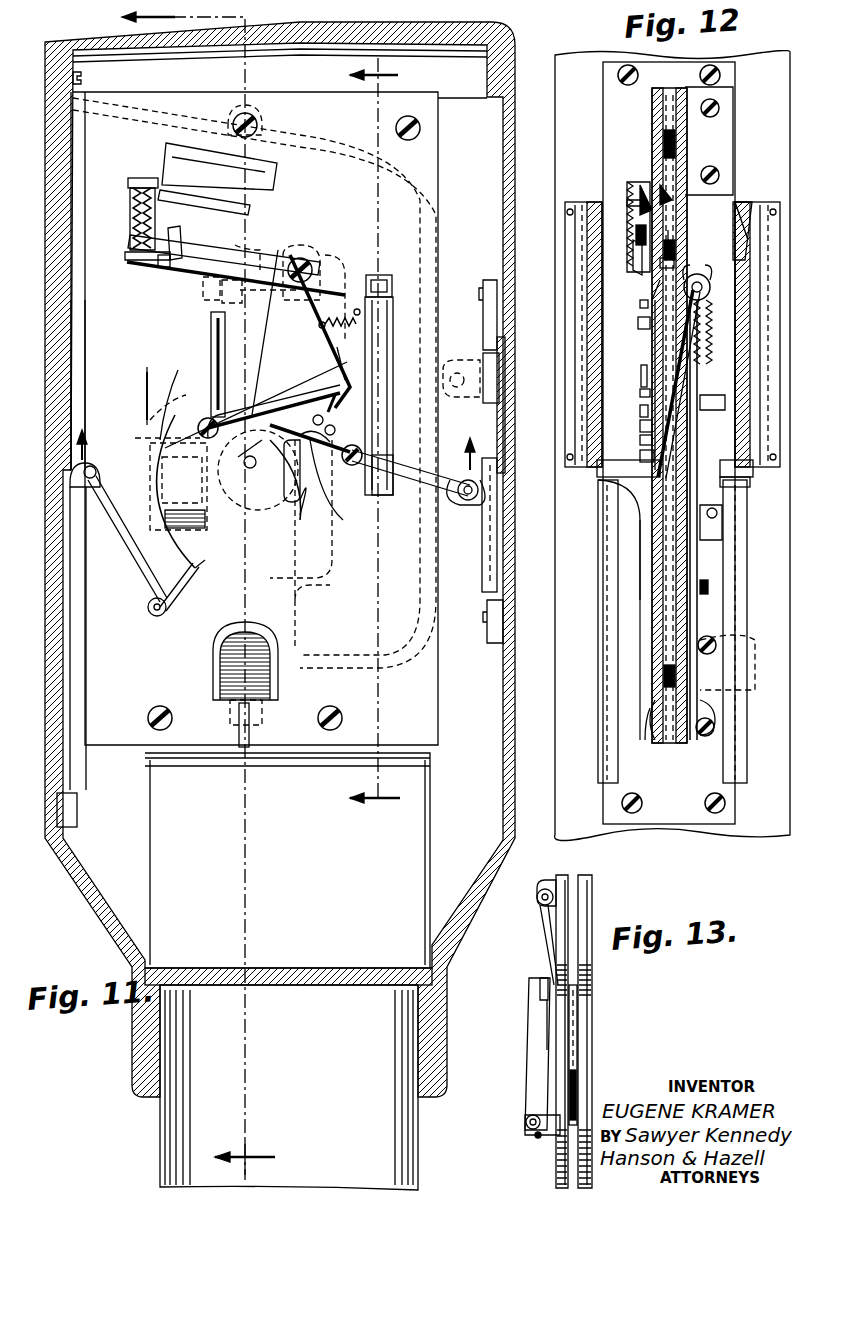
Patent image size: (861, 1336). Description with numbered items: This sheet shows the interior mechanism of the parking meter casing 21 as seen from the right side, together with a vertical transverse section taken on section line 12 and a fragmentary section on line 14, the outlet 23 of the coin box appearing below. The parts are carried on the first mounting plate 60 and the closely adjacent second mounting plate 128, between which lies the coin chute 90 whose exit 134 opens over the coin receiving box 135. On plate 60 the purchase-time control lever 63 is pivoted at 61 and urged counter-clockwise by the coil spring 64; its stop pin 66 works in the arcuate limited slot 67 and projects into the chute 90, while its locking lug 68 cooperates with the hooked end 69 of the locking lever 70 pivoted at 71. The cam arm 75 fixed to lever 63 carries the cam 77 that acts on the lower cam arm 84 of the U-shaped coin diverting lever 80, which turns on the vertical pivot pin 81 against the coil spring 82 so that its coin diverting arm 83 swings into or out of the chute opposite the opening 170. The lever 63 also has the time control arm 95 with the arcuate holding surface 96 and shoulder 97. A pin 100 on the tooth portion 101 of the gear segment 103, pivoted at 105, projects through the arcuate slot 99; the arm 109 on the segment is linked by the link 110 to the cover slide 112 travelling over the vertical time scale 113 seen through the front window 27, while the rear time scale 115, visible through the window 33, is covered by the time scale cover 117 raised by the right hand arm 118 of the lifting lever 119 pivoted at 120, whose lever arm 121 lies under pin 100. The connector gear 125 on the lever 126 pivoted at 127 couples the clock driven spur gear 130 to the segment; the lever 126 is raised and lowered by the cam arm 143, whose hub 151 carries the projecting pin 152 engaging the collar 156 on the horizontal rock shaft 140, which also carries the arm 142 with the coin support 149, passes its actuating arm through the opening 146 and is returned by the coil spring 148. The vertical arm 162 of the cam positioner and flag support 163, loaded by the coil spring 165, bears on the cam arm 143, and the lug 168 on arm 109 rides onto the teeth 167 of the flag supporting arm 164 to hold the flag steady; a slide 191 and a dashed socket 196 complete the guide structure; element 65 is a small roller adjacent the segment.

In FIG. 11, the section line 12— 12 is at (382, 434).
In FIG. 11, the section line 14— 14 is at (186, 593).
In FIG. 11, the housing 21 is at (108, 905).
In FIG. 12, the housing 21 is at (565, 75).
In FIG. 11, the tube / cup outlet 23 is at (490, 855).
In FIG. 11, the front window 27 is at (72, 355).
In FIG. 12, the front window 27 is at (588, 232).
In FIG. 11, the window 33 is at (500, 405).
In FIG. 11, the first mounting plate 60 is at (422, 143).
In FIG. 12, the first mounting plate 60 is at (652, 100).
In FIG. 13, the first mounting plate 60 is at (582, 895).
In FIG. 11, the pivot 61 is at (302, 258).
In FIG. 12, the pivot 61 is at (680, 275).
In FIG. 11, the purchase-time control lever 63 is at (283, 318).
In FIG. 12, the purchase-time control lever 63 is at (652, 300).
In FIG. 11, the coil spring 64 is at (362, 280).
In FIG. 12, the coil spring 64 is at (638, 325).
In FIG. 11, the roller 65 is at (332, 411).
In FIG. 11, the stop pin 66 is at (345, 422).
In FIG. 11, the arcuate limited slot 67 is at (320, 443).
In FIG. 11, the locking lug 68 is at (347, 394).
In FIG. 12, the locking lug 68 is at (640, 395).
In FIG. 11, the hooked end 69 is at (346, 353).
In FIG. 12, the hooked end 69 is at (640, 380).
In FIG. 11, the locking lever 70 is at (230, 440).
In FIG. 12, the locking lever 70 is at (640, 410).
In FIG. 11, the pivot 71 is at (200, 430).
In FIG. 12, the pivot 71 is at (640, 428).
In FIG. 11, the cam arm 75 is at (265, 250).
In FIG. 12, the cam arm 75 is at (673, 250).
In FIG. 11, the cam 77 is at (185, 240).
In FIG. 12, the cam 77 is at (640, 250).
In FIG. 11, the coin diverting lever 80 is at (128, 225).
In FIG. 12, the coin diverting lever 80 is at (625, 193).
In FIG. 11, the vertical pivot pin 81 is at (127, 255).
In FIG. 12, the vertical pivot pin 81 is at (627, 207).
In FIG. 11, the coil spring 82 is at (130, 185).
In FIG. 12, the coil spring 82 is at (640, 235).
In FIG. 11, the coin diverting arm 83 is at (225, 175).
In FIG. 12, the coin diverting arm 83 is at (672, 190).
In FIG. 11, the cam arm 84 is at (163, 270).
In FIG. 12, the cam arm 84 is at (660, 290).
In FIG. 11, the coin chute 90 is at (340, 155).
In FIG. 12, the coin chute 90 is at (672, 225).
In FIG. 11, the time control arm 95 is at (246, 449).
In FIG. 11, the arcuate holding surface 96 is at (262, 482).
In FIG. 11, the shoulder 97 is at (272, 510).
In FIG. 11, the arcuate slot 99 is at (306, 545).
In FIG. 11, the pin 100 is at (279, 418).
In FIG. 12, the pin 100 is at (635, 418).
In FIG. 11, the tooth portion 101 is at (200, 438).
In FIG. 11, the gear segment 103 is at (295, 509).
In FIG. 13, the gear segment 103 is at (578, 1095).
In FIG. 11, the pivot 105 is at (246, 464).
In FIG. 11, the arm 109 is at (150, 600).
In FIG. 13, the arm 109 is at (580, 1020).
In FIG. 11, the link 110 is at (115, 508).
In FIG. 12, the link 110 is at (645, 535).
In FIG. 11, the cover slide 112 is at (75, 562).
In FIG. 12, the cover slide 112 is at (610, 582).
In FIG. 11, the vertical time scale 113 is at (78, 320).
In FIG. 12, the vertical time scale 113 is at (725, 70).
In FIG. 11, the time scale 115 is at (512, 333).
In FIG. 11, the time scale cover 117 is at (482, 518).
In FIG. 11, the right hand arm 118 is at (418, 490).
In FIG. 12, the right hand arm 118 is at (600, 485).
In FIG. 11, the lifting lever 119 is at (365, 478).
In FIG. 11, the pivot 120 is at (354, 443).
In FIG. 12, the pivot 120 is at (642, 452).
In FIG. 11, the lever arm 121 is at (341, 491).
In FIG. 12, the lever arm 121 is at (645, 462).
In FIG. 11, the connector gear 125 is at (256, 397).
In FIG. 12, the connector gear 125 is at (715, 375).
In FIG. 11, the lever 126 is at (222, 335).
In FIG. 11, the pivot 127 is at (330, 335).
In FIG. 12, the second mounting plate 128 is at (690, 98).
In FIG. 13, the second mounting plate 128 is at (562, 875).
In FIG. 12, the clock driven spur gear 130 is at (722, 452).
In FIG. 11, the exit 134 is at (246, 748).
In FIG. 11, the coin receiving box 135 is at (175, 812).
In FIG. 11, the horizontal rock shaft 140 is at (340, 270).
In FIG. 12, the horizontal rock shaft 140 is at (712, 282).
In FIG. 13, the horizontal rock shaft 140 is at (536, 897).
In FIG. 11, the arm 142 is at (305, 610).
In FIG. 12, the arm 142 is at (700, 668).
In FIG. 11, the cam arm 143 is at (210, 328).
In FIG. 13, the cam arm 143 is at (540, 922).
In FIG. 12, the opening 146 is at (655, 352).
In FIG. 12, the coil spring 148 is at (722, 310).
In FIG. 11, the coin support 149 is at (255, 700).
In FIG. 12, the coin support 149 is at (690, 715).
In FIG. 11, the hub 151 is at (203, 285).
In FIG. 12, the projecting pin 152 is at (740, 230).
In FIG. 11, the collar 156 is at (235, 245).
In FIG. 12, the collar 156 is at (760, 195).
In FIG. 11, the vertical arm 162 is at (185, 393).
In FIG. 12, the vertical arm 162 is at (722, 485).
In FIG. 11, the cam positioner and flag support 163 is at (174, 575).
In FIG. 12, the cam positioner and flag support 163 is at (725, 530).
In FIG. 13, the cam positioner and flag support 163 is at (528, 1138).
In FIG. 11, the flag supporting arm 164 is at (134, 386).
In FIG. 13, the flag supporting arm 164 is at (530, 1070).
In FIG. 11, the coil spring 165 is at (183, 492).
In FIG. 13, the coil spring 165 is at (528, 1117).
In FIG. 11, the teeth 167 is at (147, 392).
In FIG. 13, the teeth 167 is at (545, 1008).
In FIG. 11, the lug 168 is at (198, 572).
In FIG. 12, the lug 168 is at (712, 558).
In FIG. 13, the lug 168 is at (550, 1015).
In FIG. 11, the opening 170 is at (219, 166).
In FIG. 11, the slide 191 is at (390, 360).
In FIG. 12, the slide 191 is at (655, 335).
In FIG. 11, the socket 196 is at (395, 393).